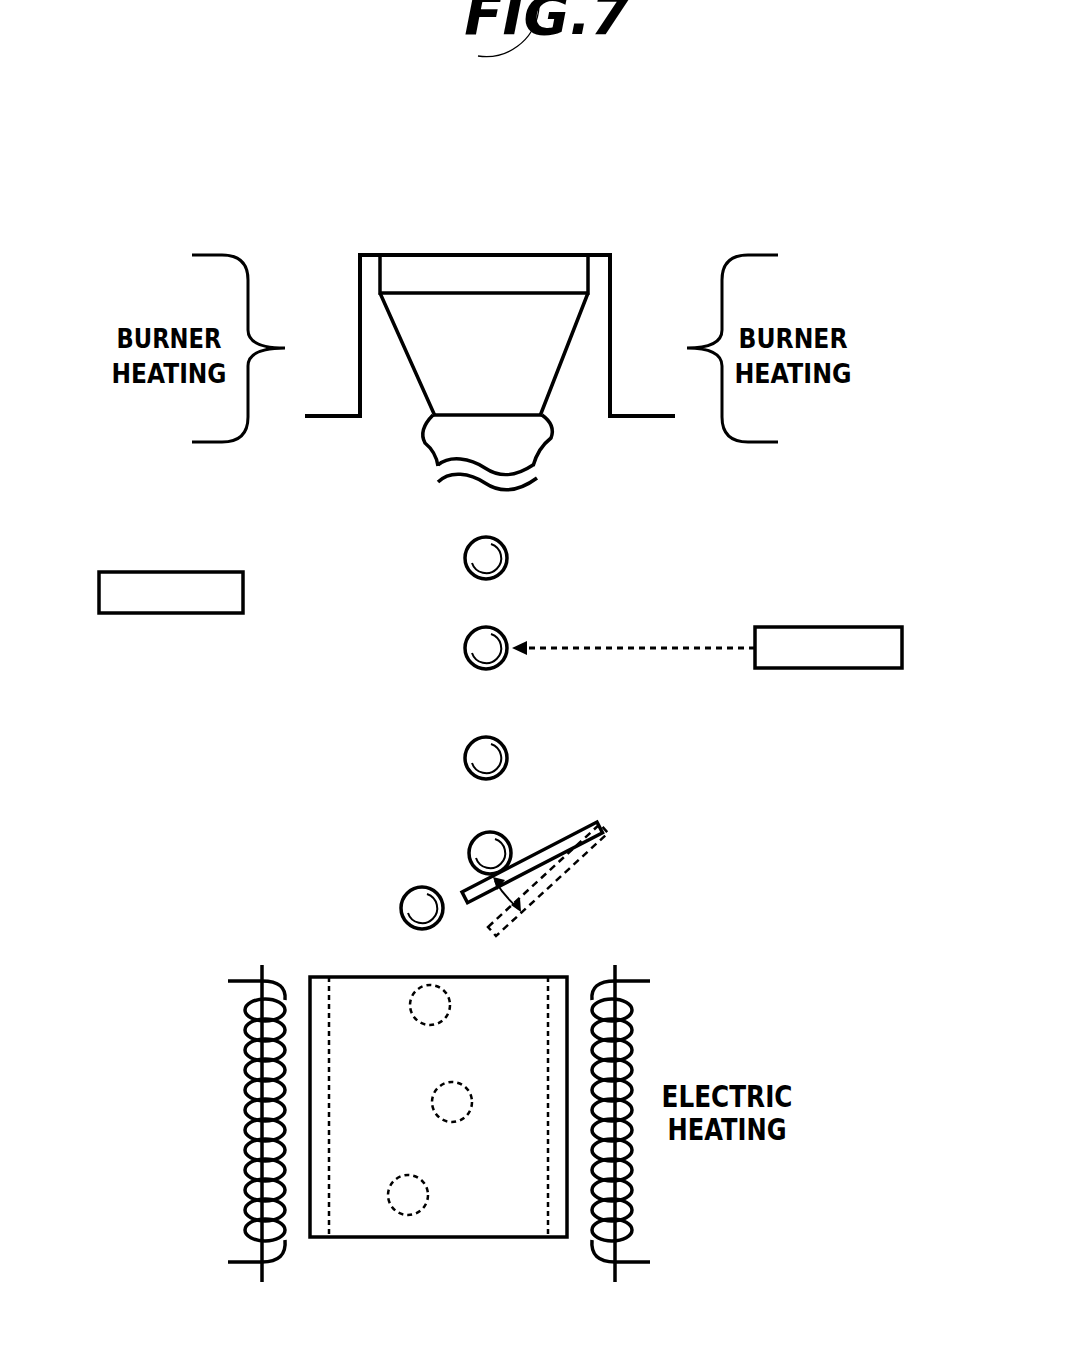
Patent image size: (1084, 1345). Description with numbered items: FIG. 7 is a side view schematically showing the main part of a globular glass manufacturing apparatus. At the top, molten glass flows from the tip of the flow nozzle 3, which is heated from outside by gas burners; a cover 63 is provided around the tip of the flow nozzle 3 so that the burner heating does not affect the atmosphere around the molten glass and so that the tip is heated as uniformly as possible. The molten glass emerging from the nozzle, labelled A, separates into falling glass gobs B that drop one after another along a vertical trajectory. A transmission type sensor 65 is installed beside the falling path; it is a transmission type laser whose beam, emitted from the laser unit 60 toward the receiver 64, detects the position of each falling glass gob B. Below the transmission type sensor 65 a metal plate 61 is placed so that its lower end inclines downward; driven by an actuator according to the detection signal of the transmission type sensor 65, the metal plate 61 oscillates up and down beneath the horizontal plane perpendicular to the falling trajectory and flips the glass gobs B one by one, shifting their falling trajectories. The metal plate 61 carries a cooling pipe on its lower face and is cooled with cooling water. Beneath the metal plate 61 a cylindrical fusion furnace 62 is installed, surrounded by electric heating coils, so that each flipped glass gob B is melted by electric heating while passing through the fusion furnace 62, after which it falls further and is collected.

The flow nozzle 3 is at (492, 308).
The cover 63 is at (611, 287).
The molten glass gob A is at (552, 433).
The glass gob B is at (480, 648).
The laser light source 60 is at (832, 652).
The metal plate 61 is at (555, 842).
The fusion furnace 62 is at (505, 1208).
The detector / sensor unit 64 is at (162, 602).
The transmission type sensor 65 is at (156, 572).